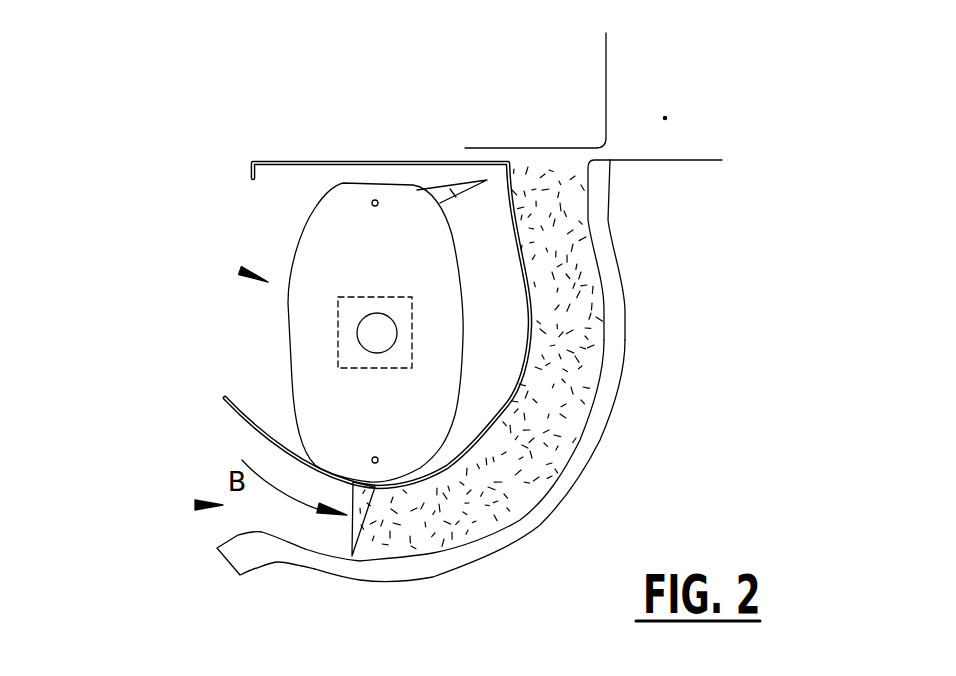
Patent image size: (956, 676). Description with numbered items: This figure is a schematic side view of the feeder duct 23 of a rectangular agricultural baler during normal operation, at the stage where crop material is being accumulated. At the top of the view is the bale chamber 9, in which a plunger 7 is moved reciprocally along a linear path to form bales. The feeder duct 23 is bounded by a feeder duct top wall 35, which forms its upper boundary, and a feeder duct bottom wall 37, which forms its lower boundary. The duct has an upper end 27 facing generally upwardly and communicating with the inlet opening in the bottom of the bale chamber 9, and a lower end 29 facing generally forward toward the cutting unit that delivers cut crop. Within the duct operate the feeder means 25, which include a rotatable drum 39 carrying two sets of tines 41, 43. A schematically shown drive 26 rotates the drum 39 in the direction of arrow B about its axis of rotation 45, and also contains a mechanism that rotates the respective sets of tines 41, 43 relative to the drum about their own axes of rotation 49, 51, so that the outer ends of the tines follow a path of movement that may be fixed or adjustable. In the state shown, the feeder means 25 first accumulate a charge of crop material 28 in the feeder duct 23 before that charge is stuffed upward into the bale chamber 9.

The plunger 7 is at (577, 98).
The bale chamber 9 is at (665, 118).
The feeder duct 23 is at (310, 535).
The feeder means 25 is at (240, 268).
The drive 26 is at (352, 362).
The upper end 27 is at (600, 195).
The charge of crop material 28 is at (493, 485).
The lower end 29 is at (195, 505).
The feeder duct top wall 35 is at (528, 317).
The feeder duct bottom wall 37 is at (592, 430).
The rotatable drum 39 is at (343, 210).
The set of tines 41 is at (357, 498).
The set of tines 43 is at (453, 193).
The axis of rotation 45 is at (363, 335).
The axis of rotation 49 is at (375, 457).
The axis of rotation 51 is at (375, 206).